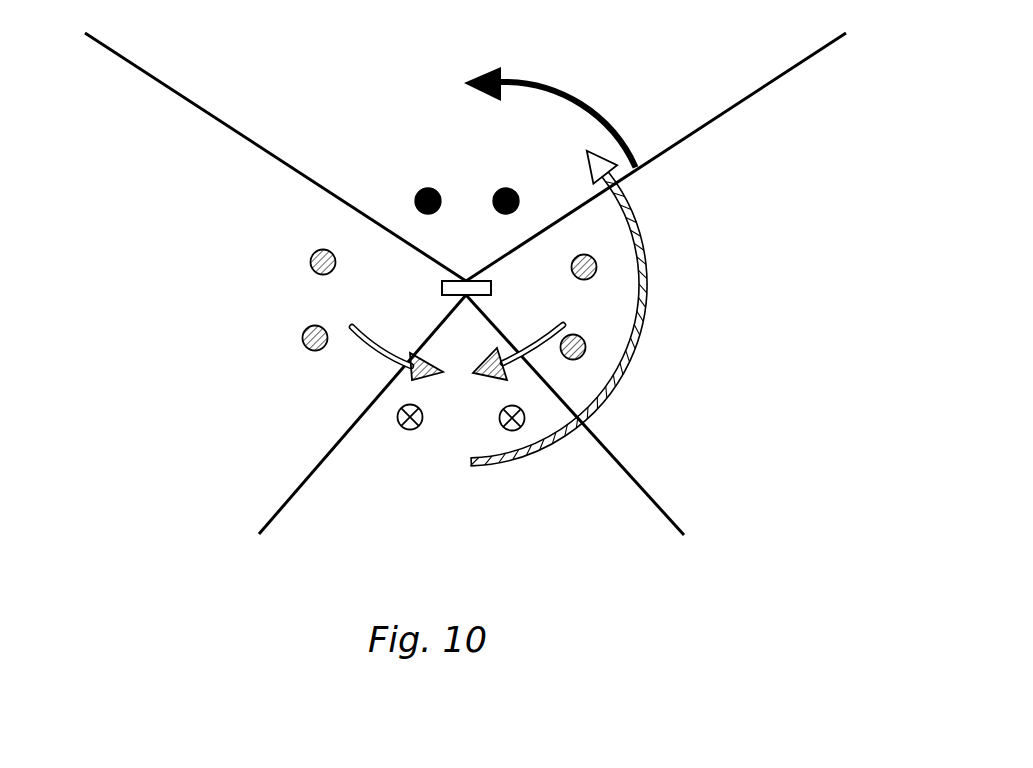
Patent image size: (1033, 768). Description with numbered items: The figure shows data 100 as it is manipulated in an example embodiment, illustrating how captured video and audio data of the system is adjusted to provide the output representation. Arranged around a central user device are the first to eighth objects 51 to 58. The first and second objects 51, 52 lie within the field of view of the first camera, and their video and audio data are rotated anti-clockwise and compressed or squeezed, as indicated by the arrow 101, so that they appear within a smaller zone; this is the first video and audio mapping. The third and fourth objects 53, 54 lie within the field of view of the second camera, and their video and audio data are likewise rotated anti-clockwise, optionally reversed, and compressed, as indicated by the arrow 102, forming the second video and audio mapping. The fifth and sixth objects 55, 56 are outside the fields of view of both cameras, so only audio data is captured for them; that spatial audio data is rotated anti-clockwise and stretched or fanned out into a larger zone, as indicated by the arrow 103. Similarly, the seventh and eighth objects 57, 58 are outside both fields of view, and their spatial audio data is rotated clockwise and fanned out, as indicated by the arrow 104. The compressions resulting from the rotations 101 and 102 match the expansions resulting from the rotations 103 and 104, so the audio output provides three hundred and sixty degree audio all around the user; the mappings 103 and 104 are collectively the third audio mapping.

The data 100 is at (760, 449).
The arrow 101 is at (592, 110).
The arrow 102 is at (615, 398).
The arrow 103 is at (392, 362).
The arrow 104 is at (548, 335).
The first object 51 is at (418, 190).
The second object 52 is at (505, 190).
The third object 53 is at (403, 430).
The fourth object 54 is at (518, 435).
The fifth object 55 is at (306, 265).
The sixth object 56 is at (298, 348).
The seventh object 57 is at (602, 265).
The eighth object 58 is at (592, 352).